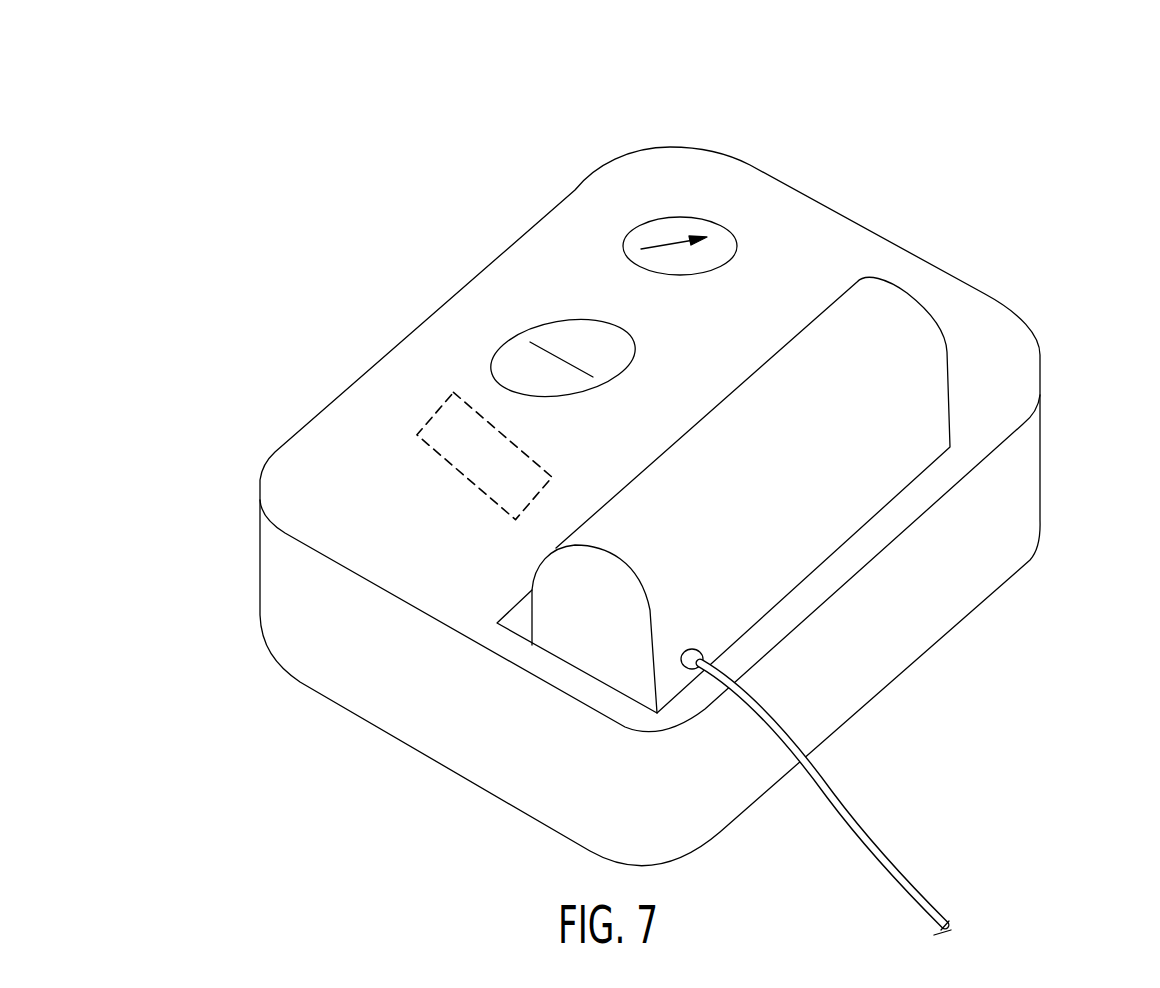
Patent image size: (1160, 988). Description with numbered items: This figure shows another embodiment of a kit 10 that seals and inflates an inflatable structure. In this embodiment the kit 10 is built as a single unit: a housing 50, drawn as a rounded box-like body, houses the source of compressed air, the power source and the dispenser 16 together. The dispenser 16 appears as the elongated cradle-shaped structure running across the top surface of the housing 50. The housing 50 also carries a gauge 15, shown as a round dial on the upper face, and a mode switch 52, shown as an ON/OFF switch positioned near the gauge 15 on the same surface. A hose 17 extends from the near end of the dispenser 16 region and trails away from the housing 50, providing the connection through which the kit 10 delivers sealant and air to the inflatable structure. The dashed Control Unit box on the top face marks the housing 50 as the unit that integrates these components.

The kit 10 is at (596, 451).
The gauge 15 is at (640, 223).
The dispenser 16 is at (913, 370).
The hose 17 is at (893, 868).
The housing 50 is at (434, 512).
The mode switch 52 is at (520, 332).